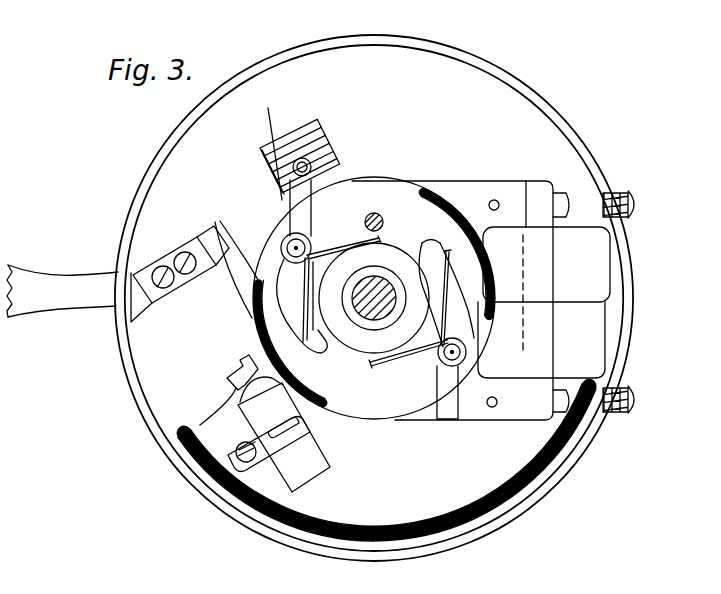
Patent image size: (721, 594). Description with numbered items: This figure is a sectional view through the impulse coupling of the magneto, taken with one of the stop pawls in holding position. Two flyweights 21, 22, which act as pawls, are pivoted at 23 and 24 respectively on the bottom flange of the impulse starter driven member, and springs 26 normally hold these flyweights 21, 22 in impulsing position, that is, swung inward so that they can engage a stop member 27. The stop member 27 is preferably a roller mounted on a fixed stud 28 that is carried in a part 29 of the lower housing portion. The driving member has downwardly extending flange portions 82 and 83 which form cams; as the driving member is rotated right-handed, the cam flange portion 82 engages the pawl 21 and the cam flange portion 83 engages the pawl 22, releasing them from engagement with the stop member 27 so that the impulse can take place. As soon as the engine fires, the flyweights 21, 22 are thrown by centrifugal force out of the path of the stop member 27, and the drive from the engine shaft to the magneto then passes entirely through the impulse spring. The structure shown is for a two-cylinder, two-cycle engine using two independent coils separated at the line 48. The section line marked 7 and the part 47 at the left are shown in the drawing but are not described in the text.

The section line 7- 7 is at (268, 110).
The flyweight 21 is at (319, 340).
The flyweight 22 is at (445, 380).
The pivot 23 is at (298, 249).
The pivot 24 is at (458, 352).
The spring 26 is at (381, 238).
The stop member 27 is at (335, 152).
The fixed stud 28 is at (322, 127).
The part of the lower housing portion 29 is at (270, 166).
The handle 47 is at (80, 298).
The line 48 is at (580, 302).
The flange portion 82 is at (255, 328).
The flange portion 83 is at (438, 212).